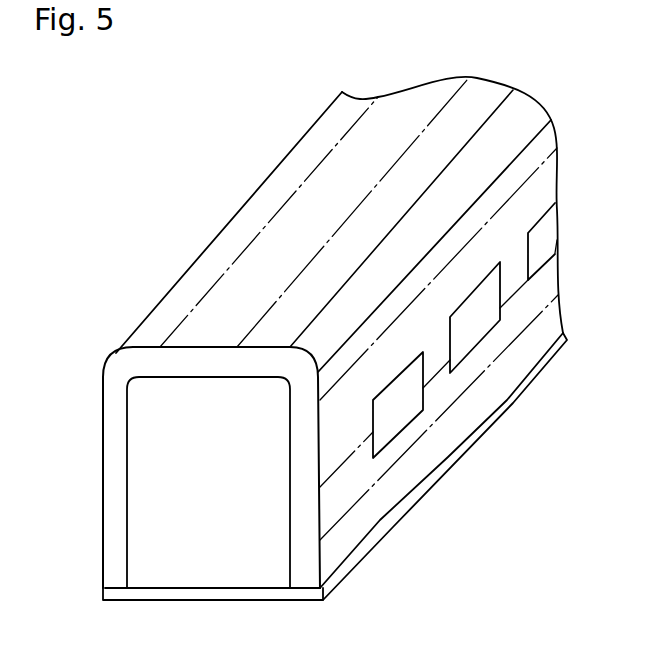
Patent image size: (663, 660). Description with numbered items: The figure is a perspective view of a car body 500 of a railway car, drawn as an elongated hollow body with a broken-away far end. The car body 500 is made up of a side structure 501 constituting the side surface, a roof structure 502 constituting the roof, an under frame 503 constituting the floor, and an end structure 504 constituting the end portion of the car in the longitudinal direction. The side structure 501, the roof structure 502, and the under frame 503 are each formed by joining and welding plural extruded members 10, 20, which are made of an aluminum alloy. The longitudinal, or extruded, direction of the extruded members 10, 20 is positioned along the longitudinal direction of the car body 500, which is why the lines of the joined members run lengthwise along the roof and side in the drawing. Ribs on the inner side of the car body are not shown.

The car body 500 is at (152, 266).
The roof structure 502 is at (252, 209).
The side structure 501 is at (440, 437).
The under frame 503 is at (368, 545).
The end structure 504 is at (298, 557).
The extruded member 10 is at (546, 274).
The extruded member 20 is at (553, 310).